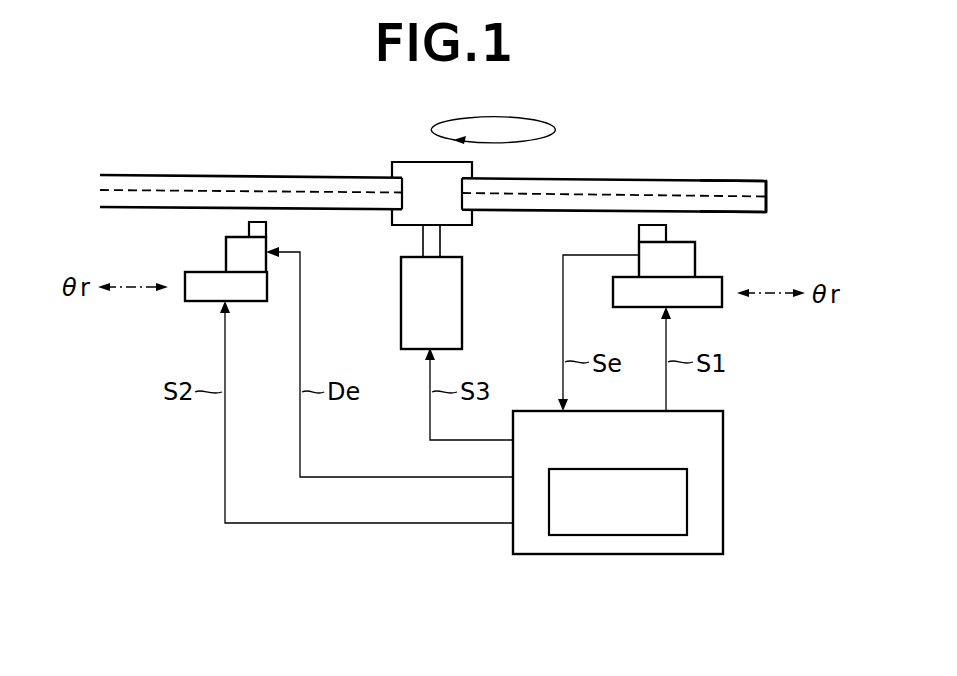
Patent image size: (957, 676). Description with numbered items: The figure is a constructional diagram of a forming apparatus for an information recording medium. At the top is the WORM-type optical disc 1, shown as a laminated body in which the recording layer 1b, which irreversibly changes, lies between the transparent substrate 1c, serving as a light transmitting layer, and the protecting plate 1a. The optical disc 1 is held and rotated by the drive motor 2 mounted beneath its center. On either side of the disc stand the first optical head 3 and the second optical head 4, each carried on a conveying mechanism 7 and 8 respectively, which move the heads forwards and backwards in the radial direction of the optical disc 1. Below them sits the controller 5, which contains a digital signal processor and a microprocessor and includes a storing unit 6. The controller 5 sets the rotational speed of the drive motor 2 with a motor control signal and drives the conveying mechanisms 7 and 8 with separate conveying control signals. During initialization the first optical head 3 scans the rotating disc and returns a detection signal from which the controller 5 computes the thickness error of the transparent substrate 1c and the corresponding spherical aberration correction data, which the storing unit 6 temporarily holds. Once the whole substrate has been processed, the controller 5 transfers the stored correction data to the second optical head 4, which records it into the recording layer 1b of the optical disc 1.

The optical disc 1 is at (596, 181).
The protecting plate 1a is at (766, 182).
The recording layer 1b is at (766, 192).
The transparent substrate 1c is at (766, 206).
The drive motor 2 is at (462, 287).
The first optical head 3 is at (695, 252).
The second optical head 4 is at (226, 249).
The controller 5 is at (723, 438).
The storing unit 6 is at (687, 515).
The conveying mechanism 7 is at (700, 307).
The conveying mechanism 8 is at (195, 302).